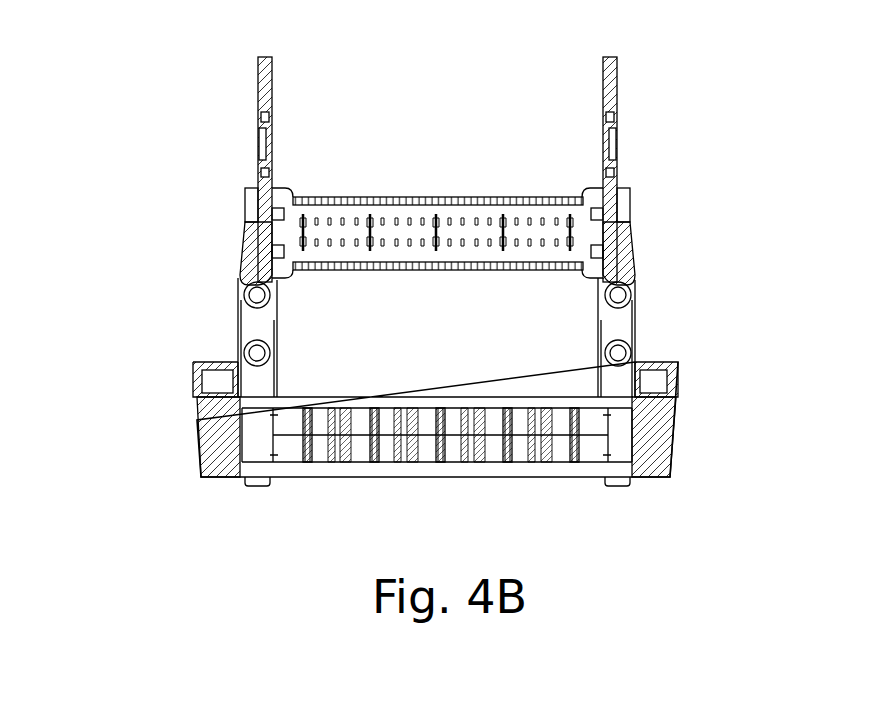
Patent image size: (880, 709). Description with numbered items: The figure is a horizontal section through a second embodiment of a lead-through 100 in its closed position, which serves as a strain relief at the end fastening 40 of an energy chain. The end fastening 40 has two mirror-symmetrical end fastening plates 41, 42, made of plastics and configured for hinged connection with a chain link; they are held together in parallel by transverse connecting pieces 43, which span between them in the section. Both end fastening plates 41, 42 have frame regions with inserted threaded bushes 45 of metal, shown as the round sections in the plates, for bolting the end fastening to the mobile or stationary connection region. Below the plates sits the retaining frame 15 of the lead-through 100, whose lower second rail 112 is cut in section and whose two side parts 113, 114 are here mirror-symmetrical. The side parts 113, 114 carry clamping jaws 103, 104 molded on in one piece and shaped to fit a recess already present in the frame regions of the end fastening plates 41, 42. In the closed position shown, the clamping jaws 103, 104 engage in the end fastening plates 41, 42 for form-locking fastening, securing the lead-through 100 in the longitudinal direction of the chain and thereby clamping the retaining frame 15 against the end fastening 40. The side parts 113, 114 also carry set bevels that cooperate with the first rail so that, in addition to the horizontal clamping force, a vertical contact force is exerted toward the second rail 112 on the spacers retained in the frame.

The retaining frame 15 is at (97, 357).
The end fastening 40 is at (652, 123).
The end fastening plate 41 is at (253, 253).
The end fastening plate 42 is at (623, 247).
The transverse connecting pieces 43 is at (437, 197).
The threaded bushes 45 is at (620, 294).
The lead-through 100 is at (683, 454).
The clamping jaw 103 is at (222, 363).
The clamping jaw 104 is at (660, 363).
The second rail 112 is at (445, 470).
The side part 113 is at (212, 442).
The side part 114 is at (655, 405).